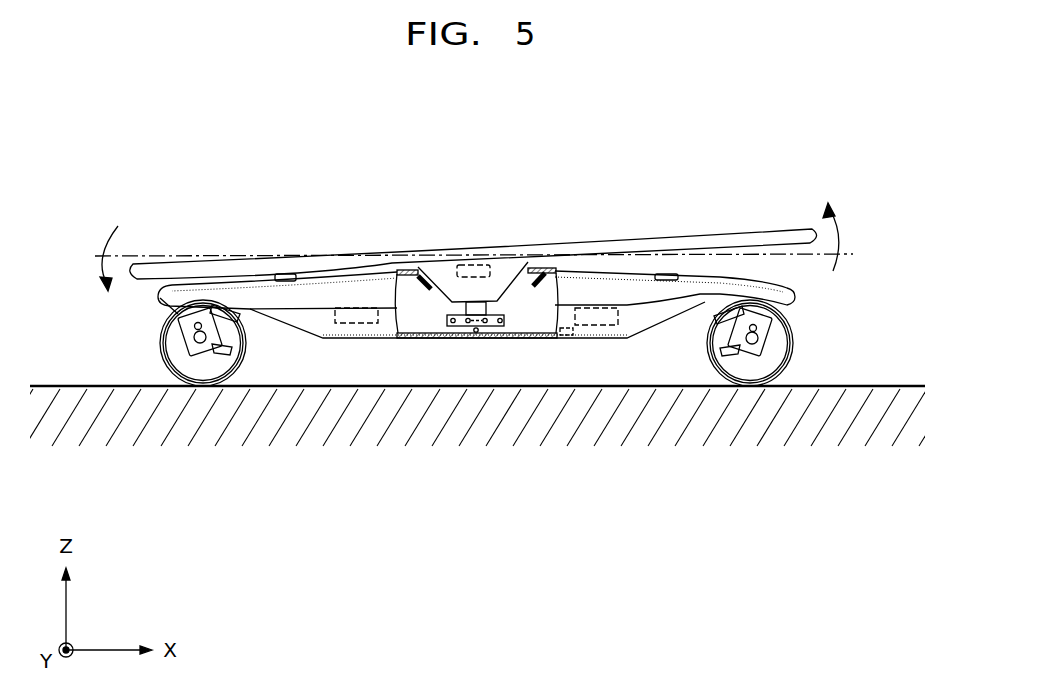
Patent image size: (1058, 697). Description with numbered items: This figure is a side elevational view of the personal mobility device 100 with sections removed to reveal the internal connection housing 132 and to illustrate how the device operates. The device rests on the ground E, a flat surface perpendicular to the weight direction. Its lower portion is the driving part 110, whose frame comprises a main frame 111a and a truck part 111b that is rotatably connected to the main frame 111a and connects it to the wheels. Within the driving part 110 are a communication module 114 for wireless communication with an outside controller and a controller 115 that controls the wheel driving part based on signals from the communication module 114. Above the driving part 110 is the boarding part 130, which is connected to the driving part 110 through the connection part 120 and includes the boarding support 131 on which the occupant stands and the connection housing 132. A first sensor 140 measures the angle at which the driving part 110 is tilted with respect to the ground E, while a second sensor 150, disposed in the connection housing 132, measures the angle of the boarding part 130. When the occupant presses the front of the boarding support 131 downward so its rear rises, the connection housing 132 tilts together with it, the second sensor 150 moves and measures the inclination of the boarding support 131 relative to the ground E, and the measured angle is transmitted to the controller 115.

The personal mobility device 100 is at (715, 160).
The driving part 110 is at (335, 346).
The main frame 111a is at (172, 300).
The truck part 111b is at (190, 358).
The communication module 114 is at (578, 333).
The controller 115 is at (336, 308).
The connection part 120 is at (485, 311).
The boarding part 130 is at (528, 170).
The boarding support 131 is at (642, 238).
The connection housing 132 is at (505, 266).
The first sensor 140 is at (468, 323).
The second sensor 150 is at (457, 275).
The ground E is at (870, 400).